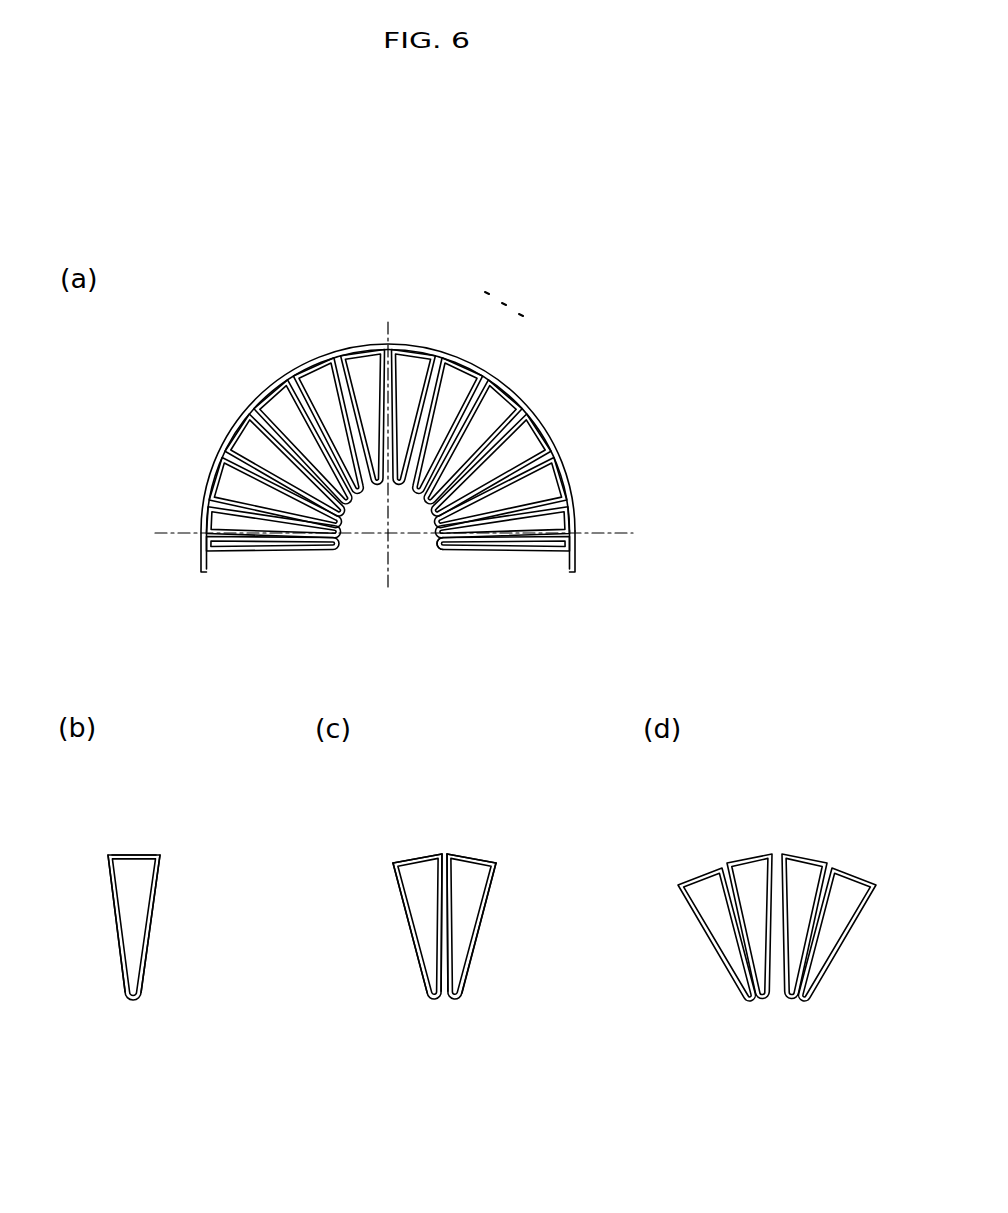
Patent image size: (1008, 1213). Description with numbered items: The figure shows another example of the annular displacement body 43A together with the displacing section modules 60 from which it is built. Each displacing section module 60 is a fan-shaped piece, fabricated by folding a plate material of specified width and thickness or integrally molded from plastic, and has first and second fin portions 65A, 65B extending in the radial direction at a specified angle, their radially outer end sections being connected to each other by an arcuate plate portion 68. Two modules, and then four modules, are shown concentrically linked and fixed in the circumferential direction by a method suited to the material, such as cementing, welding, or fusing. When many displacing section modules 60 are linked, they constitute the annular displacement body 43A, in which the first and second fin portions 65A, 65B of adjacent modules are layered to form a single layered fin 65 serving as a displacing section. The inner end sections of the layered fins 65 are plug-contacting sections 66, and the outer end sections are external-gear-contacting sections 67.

The annular displacement body 43A is at (434, 482).
The displacing section module 60 is at (461, 632).
The layered fin 65 is at (542, 486).
The first fin portion 65A is at (540, 476).
The second fin portion 65B is at (540, 476).
The plug-contacting section 66 is at (435, 549).
The external-gear-contacting section 67 is at (562, 572).
The arcuate plate portion 68 is at (135, 855).